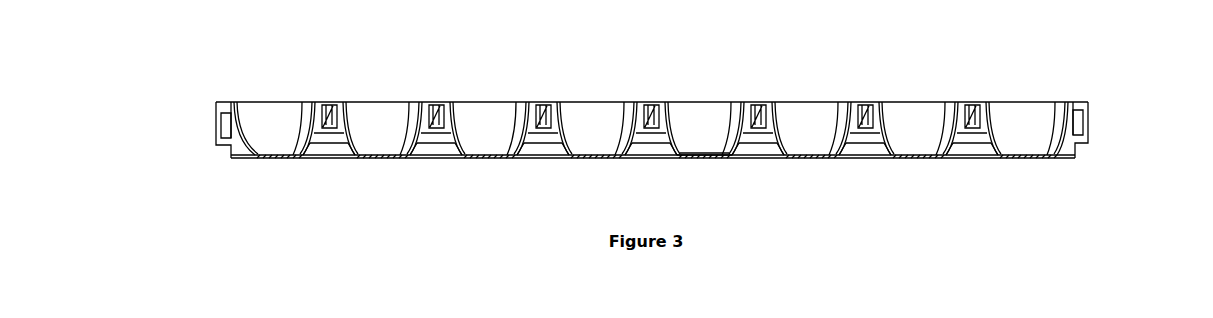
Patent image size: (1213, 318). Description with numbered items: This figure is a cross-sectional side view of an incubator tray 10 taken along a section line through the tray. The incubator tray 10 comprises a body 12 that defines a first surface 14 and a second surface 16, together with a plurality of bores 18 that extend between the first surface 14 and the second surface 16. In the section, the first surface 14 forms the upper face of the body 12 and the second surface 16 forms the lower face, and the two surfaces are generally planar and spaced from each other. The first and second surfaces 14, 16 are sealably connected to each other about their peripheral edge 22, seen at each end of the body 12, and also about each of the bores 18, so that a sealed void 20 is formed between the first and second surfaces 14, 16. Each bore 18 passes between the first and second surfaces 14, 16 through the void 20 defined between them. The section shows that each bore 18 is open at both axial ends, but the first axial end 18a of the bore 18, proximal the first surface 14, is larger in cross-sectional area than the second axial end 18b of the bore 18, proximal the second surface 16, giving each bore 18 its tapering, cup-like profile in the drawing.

The incubator tray 10 is at (475, 84).
The body 12 is at (1090, 120).
The first surface 14 is at (325, 101).
The second surface 16 is at (325, 160).
The bore 18 is at (590, 118).
The first axial end 18a is at (700, 102).
The second axial end 18b is at (702, 160).
The sealed void 20 is at (973, 143).
The peripheral edge 22 is at (215, 122).